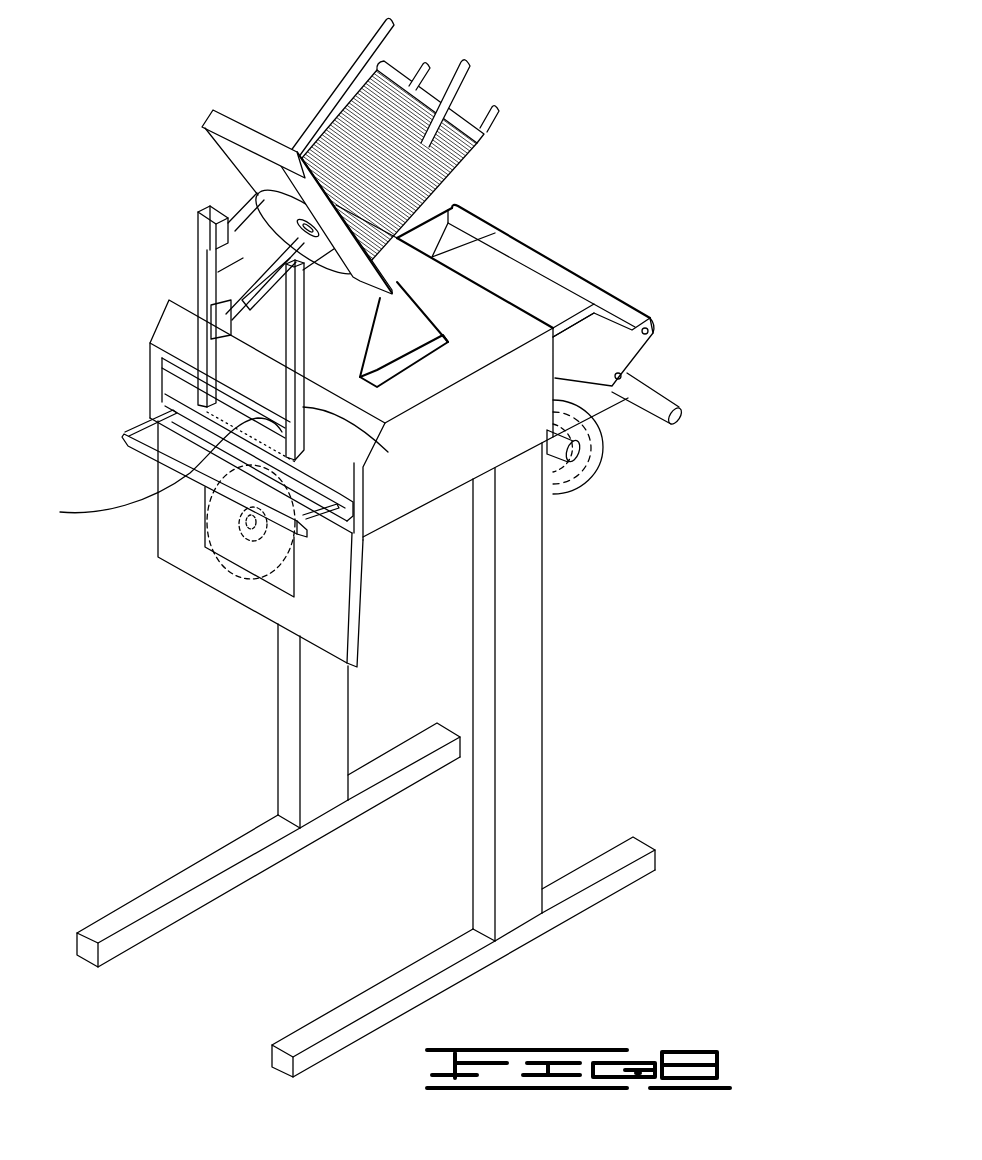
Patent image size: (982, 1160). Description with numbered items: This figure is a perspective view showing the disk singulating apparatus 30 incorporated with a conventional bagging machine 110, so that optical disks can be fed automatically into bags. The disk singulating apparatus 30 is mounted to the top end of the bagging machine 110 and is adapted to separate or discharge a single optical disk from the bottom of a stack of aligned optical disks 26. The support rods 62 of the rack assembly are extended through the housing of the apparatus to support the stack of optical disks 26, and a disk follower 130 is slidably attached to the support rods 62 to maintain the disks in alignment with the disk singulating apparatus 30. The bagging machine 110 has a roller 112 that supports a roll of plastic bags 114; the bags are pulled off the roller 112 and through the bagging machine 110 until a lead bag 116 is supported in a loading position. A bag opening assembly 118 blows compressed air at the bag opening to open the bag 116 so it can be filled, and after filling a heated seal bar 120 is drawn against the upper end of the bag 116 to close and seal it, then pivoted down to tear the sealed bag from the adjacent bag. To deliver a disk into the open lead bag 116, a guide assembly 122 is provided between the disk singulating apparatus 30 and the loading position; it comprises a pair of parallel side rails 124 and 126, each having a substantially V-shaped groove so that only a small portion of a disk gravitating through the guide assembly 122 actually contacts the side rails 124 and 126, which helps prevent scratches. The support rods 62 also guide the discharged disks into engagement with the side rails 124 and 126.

The stack of aligned optical disks 26 is at (398, 64).
The disk singulating apparatus 30 is at (206, 112).
The support rods 62 is at (375, 50).
The bagging machine 110 is at (543, 624).
The roller 112 is at (580, 453).
The roll of plastic bags 114 is at (603, 430).
The lead bag 116 is at (217, 553).
The bag opening assembly 118 is at (188, 450).
The heated seal bar 120 is at (190, 470).
The guide assembly 122 is at (193, 245).
The side rail 124 is at (198, 280).
The side rail 126 is at (367, 437).
The disk follower 130 is at (456, 110).